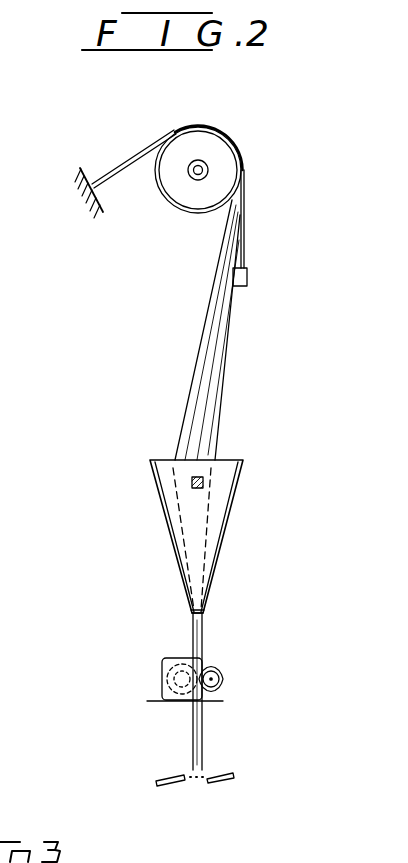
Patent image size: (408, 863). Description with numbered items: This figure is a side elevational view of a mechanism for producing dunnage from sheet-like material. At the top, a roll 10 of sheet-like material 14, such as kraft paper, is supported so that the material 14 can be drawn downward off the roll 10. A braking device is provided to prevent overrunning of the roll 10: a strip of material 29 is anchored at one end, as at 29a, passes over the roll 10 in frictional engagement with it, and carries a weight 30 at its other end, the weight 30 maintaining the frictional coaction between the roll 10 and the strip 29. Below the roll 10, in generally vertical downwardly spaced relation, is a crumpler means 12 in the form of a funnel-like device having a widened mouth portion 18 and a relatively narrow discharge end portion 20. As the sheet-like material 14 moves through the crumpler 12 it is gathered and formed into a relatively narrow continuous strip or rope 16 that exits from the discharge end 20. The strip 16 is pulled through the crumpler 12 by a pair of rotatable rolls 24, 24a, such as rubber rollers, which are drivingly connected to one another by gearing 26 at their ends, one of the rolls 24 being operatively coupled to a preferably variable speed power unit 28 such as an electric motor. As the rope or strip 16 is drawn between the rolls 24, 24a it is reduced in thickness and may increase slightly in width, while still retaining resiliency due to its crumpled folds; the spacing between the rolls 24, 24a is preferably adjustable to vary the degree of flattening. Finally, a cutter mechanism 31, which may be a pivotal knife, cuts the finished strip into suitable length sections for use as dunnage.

The roll 10 is at (240, 131).
The crumpler means 12 is at (240, 520).
The sheet-like material 14 is at (227, 333).
The strip or rope 16 is at (193, 632).
The widened mouth portion 18 is at (231, 457).
The discharge end portion 20 is at (203, 617).
The rotatable roll 24 is at (163, 660).
The rotatable roll 24a is at (222, 678).
The gearing 26 is at (156, 675).
The power unit 28 is at (162, 688).
The strip of material 29 is at (242, 227).
The anchor 29a is at (80, 193).
The weight 30 is at (247, 274).
The cutter mechanism 31 is at (197, 787).